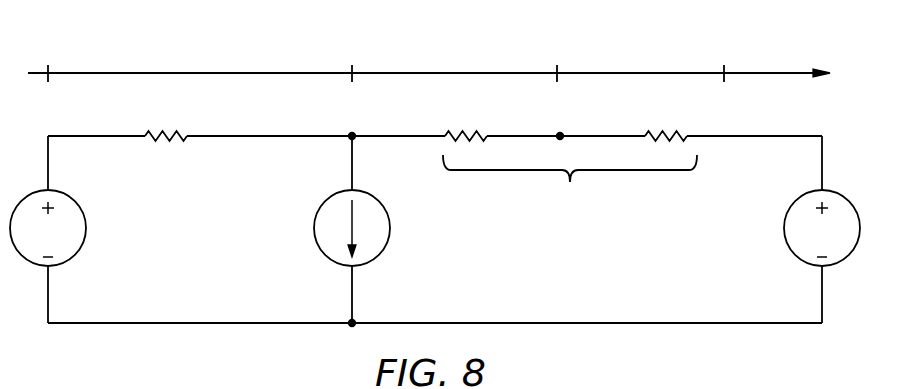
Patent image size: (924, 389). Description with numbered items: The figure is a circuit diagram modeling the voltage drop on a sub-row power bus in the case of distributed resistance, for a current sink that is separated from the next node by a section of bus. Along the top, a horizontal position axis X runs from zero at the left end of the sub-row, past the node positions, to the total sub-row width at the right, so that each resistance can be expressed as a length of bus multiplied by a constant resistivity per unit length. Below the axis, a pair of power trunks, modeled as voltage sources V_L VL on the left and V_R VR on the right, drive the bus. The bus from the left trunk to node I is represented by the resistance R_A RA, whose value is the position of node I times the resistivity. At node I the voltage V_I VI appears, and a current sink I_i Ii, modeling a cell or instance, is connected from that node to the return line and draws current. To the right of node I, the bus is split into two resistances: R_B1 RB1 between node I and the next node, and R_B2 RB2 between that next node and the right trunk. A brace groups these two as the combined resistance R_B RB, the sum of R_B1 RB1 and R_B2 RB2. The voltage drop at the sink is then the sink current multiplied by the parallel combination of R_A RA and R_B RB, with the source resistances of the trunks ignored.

The position axis X is at (440, 58).
The resistance R_A RA is at (166, 116).
The resistance R_B1 RB1 is at (468, 115).
The resistance R_B2 RB2 is at (668, 115).
The resistance R_B RB is at (570, 187).
The node voltage V_I VI is at (353, 116).
The left power trunk V_L VL is at (48, 245).
The current sink I_i Ii is at (355, 245).
The right power trunk V_R VR is at (822, 245).